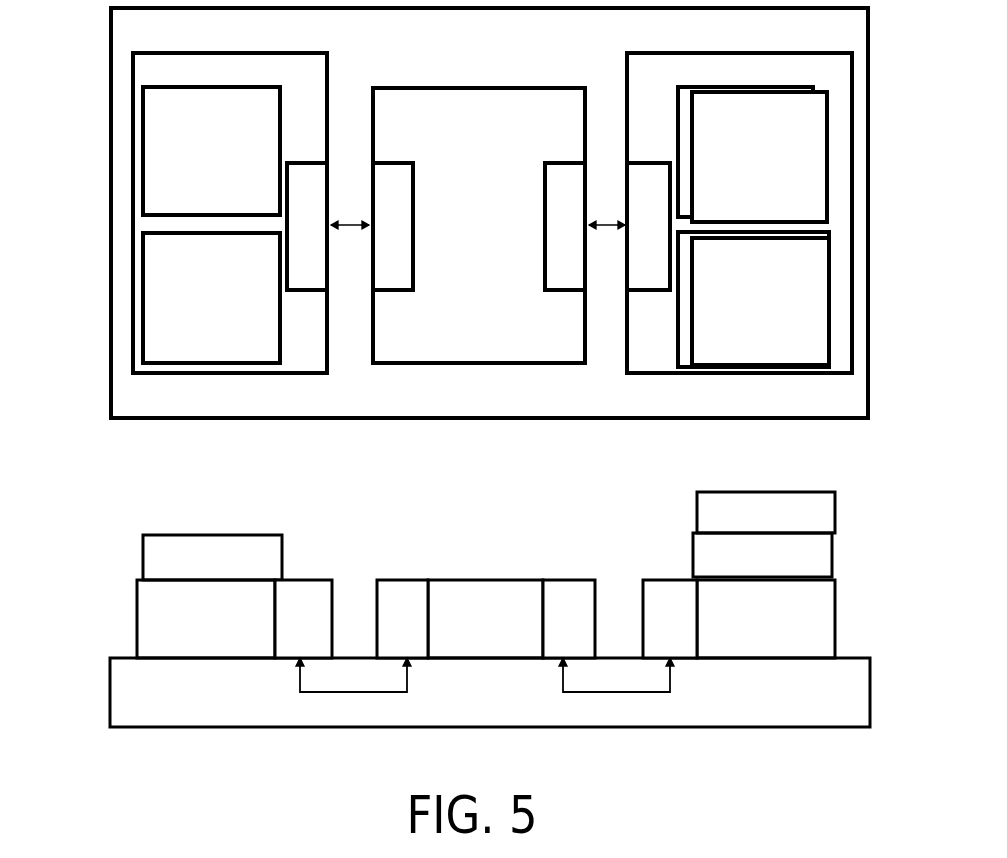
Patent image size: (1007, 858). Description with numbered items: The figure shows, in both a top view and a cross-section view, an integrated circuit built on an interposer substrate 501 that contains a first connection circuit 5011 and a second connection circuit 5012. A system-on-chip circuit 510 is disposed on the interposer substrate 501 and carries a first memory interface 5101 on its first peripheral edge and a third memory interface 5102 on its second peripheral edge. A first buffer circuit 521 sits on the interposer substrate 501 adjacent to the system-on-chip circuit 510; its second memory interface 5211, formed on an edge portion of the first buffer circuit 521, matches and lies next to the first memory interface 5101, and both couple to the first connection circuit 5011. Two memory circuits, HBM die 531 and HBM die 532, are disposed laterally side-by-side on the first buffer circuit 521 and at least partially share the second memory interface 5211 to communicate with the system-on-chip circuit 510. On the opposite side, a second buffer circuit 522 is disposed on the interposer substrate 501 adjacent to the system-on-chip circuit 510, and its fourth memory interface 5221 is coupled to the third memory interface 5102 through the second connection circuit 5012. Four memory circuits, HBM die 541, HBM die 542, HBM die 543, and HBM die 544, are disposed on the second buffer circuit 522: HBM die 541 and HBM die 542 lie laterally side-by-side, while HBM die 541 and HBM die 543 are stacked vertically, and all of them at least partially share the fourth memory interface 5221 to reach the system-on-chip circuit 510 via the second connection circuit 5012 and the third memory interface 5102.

The interposer substrate 501 is at (500, 420).
The system-on-chip circuit 510 is at (458, 364).
The first memory interface 5101 is at (413, 291).
The third memory interface 5102 is at (560, 291).
The first buffer circuit 521 is at (305, 363).
The second buffer circuit 522 is at (660, 363).
The second memory interface 5211 is at (310, 291).
The fourth memory interface 5221 is at (660, 291).
The first connection circuit 5011 is at (250, 683).
The second connection circuit 5012 is at (720, 687).
The HBM die 531 is at (148, 323).
The HBM die 532 is at (145, 168).
The HBM die 541 is at (680, 367).
The HBM die 542 is at (805, 86).
The HBM die 543 is at (748, 358).
The HBM die 544 is at (827, 100).